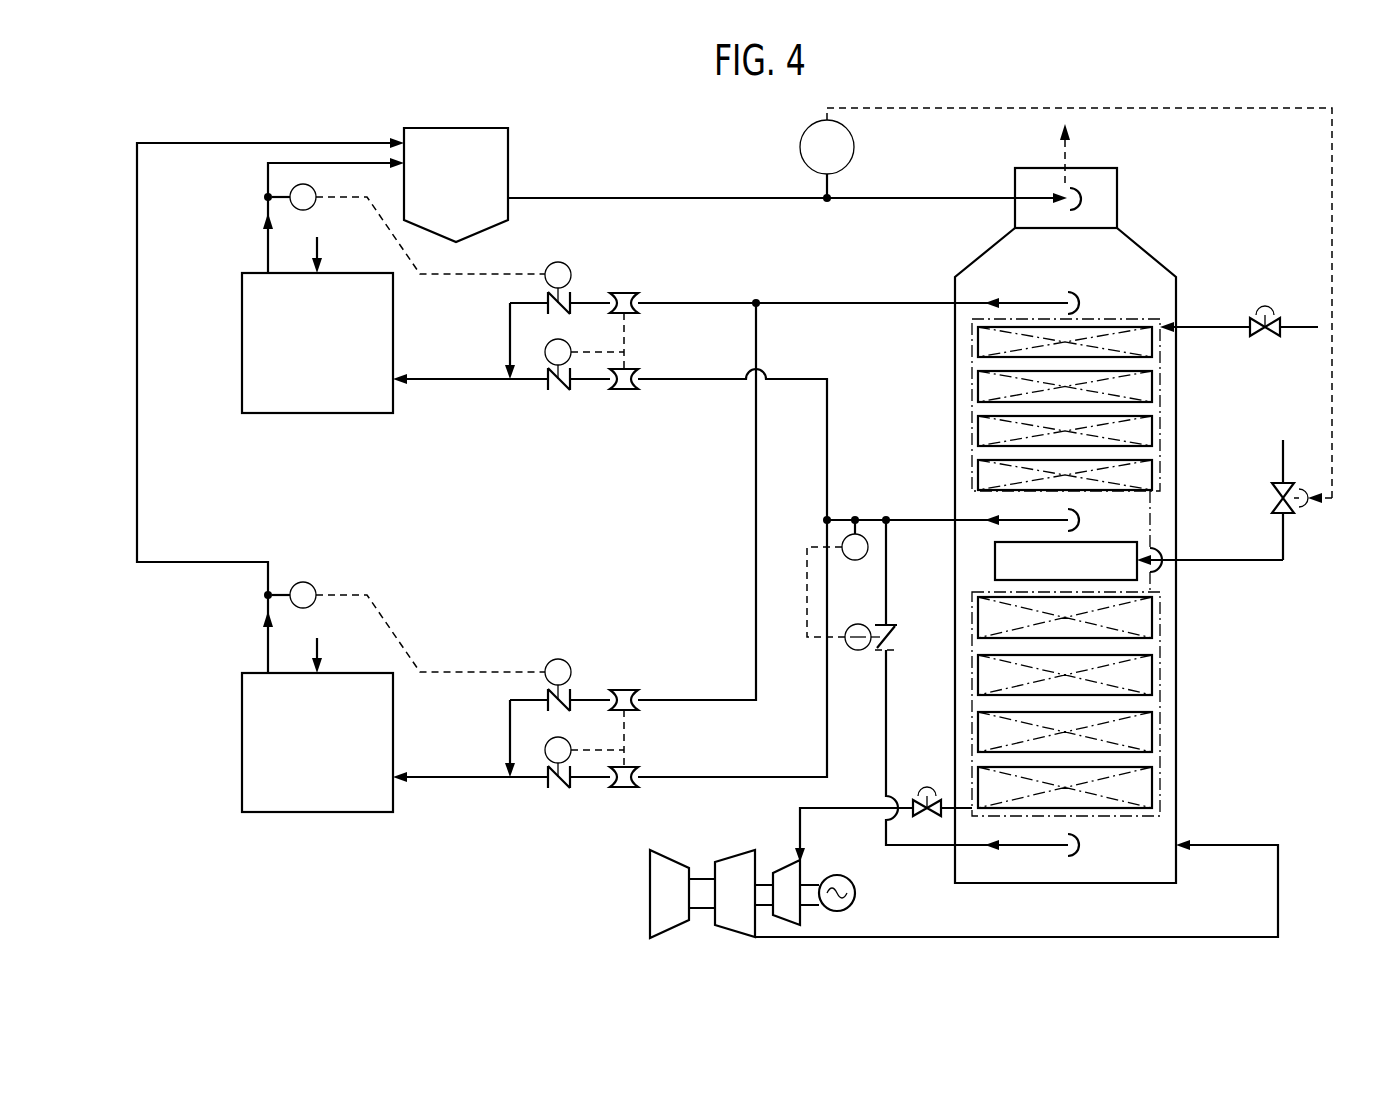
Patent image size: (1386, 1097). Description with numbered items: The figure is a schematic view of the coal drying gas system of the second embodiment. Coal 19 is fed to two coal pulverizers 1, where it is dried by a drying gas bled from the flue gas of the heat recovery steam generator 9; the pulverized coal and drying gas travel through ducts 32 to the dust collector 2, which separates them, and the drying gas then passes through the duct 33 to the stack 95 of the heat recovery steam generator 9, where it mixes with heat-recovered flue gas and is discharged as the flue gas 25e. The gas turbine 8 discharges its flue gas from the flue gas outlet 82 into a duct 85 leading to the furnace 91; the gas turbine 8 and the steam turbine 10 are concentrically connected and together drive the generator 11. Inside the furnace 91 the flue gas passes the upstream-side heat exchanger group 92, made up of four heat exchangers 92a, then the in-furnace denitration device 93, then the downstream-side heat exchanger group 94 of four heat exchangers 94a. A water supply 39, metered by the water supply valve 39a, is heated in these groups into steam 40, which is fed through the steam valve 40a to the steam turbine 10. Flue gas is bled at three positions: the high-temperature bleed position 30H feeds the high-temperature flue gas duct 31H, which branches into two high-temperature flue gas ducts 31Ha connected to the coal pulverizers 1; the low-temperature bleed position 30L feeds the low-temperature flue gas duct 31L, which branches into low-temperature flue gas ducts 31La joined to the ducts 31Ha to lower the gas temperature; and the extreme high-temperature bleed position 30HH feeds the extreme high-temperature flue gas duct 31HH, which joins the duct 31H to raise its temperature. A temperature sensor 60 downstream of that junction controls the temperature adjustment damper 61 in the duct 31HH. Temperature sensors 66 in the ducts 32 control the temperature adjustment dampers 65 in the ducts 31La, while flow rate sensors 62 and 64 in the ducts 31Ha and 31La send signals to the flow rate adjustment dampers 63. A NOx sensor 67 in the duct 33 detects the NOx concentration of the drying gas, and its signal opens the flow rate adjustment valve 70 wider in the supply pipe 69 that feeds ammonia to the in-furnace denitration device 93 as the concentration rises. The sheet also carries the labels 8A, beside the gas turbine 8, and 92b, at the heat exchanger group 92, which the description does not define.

The coal pulverizer 1 is at (317, 414).
The dust collector 2 is at (510, 138).
The gas turbine 8 is at (733, 860).
The turbine 8A is at (674, 862).
The heat recovery steam generator 9 is at (1200, 290).
The steam turbine 10 is at (786, 866).
The generator 11 is at (843, 876).
The coal 19 is at (320, 248).
The flue gas 25e is at (1068, 150).
The low-temperature bleed position 30L is at (1080, 300).
The high-temperature bleed position 30H is at (1082, 522).
The extreme high-temperature bleed position 30HH is at (1080, 850).
The low-temperature flue gas duct 31L is at (848, 302).
The low-temperature flue gas duct 31La is at (718, 302).
The high-temperature flue gas duct 31H is at (918, 519).
The high-temperature flue gas duct 31Ha is at (470, 382).
The extreme high-temperature flue gas duct 31HH is at (915, 848).
The duct 32 is at (262, 182).
The drying gas discharging duct 33 is at (698, 197).
The water supply 39 is at (1300, 326).
The water supply valve 39a is at (1270, 338).
The steam 40 is at (853, 806).
The steam valve 40a is at (928, 792).
The temperature sensor 60 is at (855, 560).
The temperature adjustment damper 61 is at (890, 625).
The flow rate sensor 62 is at (624, 392).
The flow rate adjustment damper 63 is at (572, 390).
The flow rate sensor 64 is at (624, 290).
The temperature adjustment damper 65 is at (572, 292).
The temperature sensor 66 is at (312, 182).
The NOx sensor 67 is at (856, 150).
The supply pipe 69 is at (1262, 562).
The flow rate adjustment valve 70 is at (1290, 515).
The flue gas outlet 82 is at (755, 940).
The duct 85 is at (1228, 935).
The furnace 91 is at (1152, 316).
The upstream-side heat exchange portion 92 is at (1162, 700).
The upstream-side heat exchanger 92a is at (1154, 615).
The bypass duct 92b is at (1162, 583).
The in-furnace denitration device 93 is at (993, 549).
The downstream-side heat exchange portion 94 is at (1165, 410).
The downstream-side heat exchanger 94a is at (1154, 347).
The stack 95 is at (1118, 198).